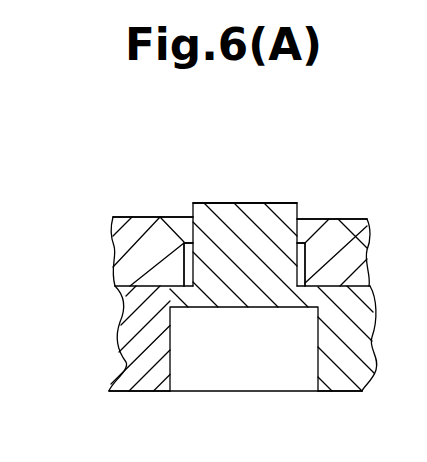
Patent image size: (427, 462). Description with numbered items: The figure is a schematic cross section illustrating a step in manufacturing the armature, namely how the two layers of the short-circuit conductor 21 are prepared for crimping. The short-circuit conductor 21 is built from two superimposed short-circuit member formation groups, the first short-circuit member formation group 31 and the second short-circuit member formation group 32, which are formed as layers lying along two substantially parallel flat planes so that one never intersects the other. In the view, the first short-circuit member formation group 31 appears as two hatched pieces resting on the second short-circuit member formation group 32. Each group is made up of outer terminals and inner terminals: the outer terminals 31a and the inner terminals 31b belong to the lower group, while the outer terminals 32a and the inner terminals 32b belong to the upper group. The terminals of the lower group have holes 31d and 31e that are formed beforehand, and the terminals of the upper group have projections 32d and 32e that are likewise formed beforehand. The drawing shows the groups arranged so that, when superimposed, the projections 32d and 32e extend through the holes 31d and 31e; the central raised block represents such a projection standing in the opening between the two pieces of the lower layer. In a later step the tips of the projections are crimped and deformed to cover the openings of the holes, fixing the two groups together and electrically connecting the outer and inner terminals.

The short-circuit conductor 21 is at (68, 233).
The first short-circuit member formation group 31 is at (113, 245).
The second short-circuit member formation group 32 is at (126, 320).
The outer terminal 31a is at (139, 224).
The inner terminal 31b is at (249, 193).
The hole 31d is at (301, 242).
The hole 31e is at (288, 223).
The projection 32d is at (253, 207).
The projection 32e is at (245, 167).
The outer terminal 32a is at (136, 391).
The inner terminal 32b is at (252, 415).